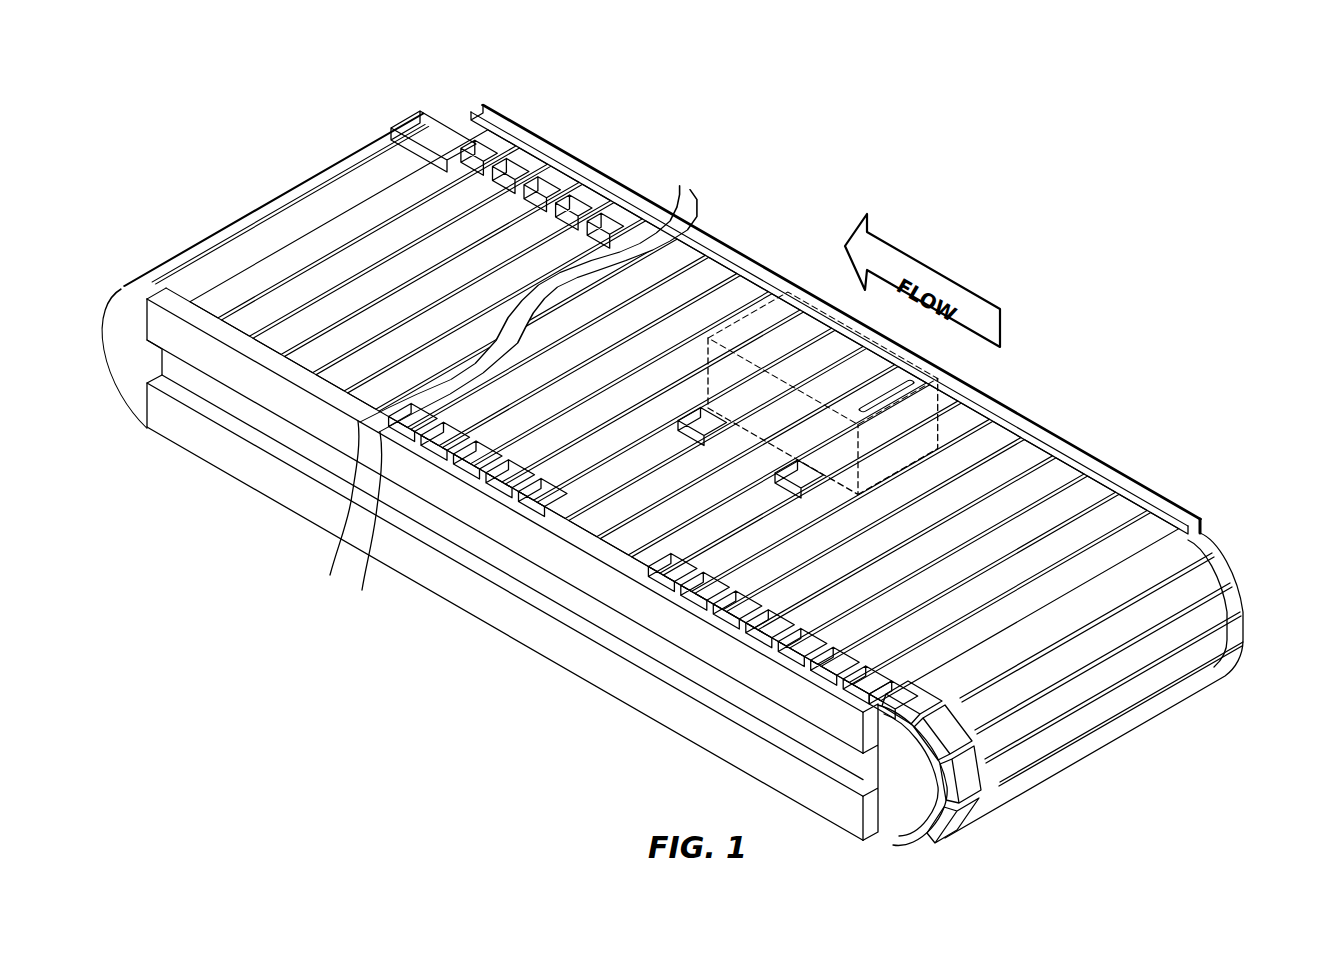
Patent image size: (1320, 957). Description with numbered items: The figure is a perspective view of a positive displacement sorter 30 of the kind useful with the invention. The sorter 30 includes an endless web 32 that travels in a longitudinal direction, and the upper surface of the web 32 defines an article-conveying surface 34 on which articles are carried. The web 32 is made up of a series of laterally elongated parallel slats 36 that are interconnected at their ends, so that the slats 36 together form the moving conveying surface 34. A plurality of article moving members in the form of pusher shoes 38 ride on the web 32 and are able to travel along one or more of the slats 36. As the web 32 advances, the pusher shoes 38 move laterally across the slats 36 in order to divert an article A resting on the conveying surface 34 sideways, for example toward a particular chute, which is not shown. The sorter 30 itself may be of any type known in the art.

The positive displacement sorter 30 is at (554, 130).
The endless web 32 is at (292, 177).
The article-conveying surface 34 is at (492, 245).
The slats 36 is at (190, 262).
The pusher shoes 38 is at (450, 125).
The article A is at (957, 398).